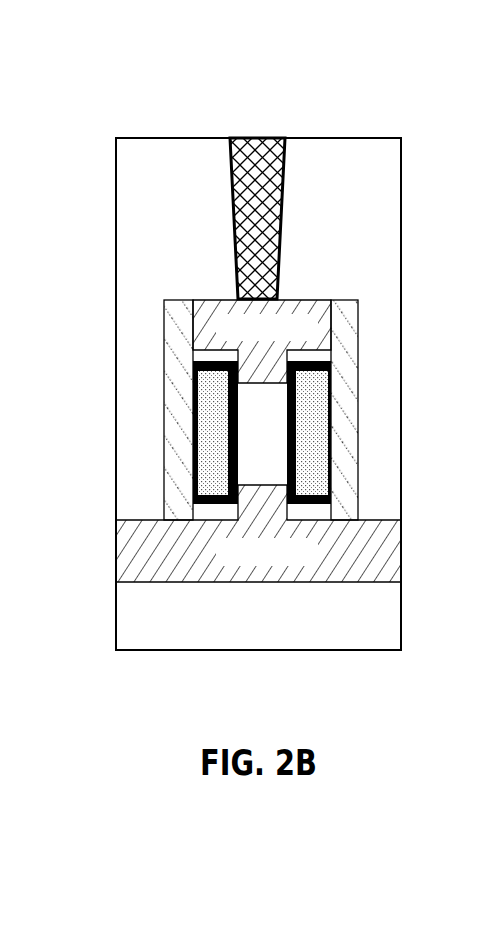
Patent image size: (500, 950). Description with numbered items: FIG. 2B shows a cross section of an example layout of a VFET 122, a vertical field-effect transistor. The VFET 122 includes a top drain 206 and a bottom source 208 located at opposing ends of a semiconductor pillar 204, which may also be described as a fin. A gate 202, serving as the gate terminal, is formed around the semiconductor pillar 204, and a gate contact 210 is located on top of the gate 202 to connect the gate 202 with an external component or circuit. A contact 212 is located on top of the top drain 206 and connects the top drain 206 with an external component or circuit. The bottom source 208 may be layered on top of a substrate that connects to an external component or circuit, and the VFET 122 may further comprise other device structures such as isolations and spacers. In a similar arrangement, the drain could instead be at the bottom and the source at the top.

The VFET 122 is at (272, 34).
The gate 202 is at (205, 452).
The semiconductor pillar 204 is at (279, 428).
The top drain 206 is at (312, 308).
The bottom source 208 is at (133, 557).
The gate contact 210 is at (486, 130).
The contact 212 is at (250, 155).